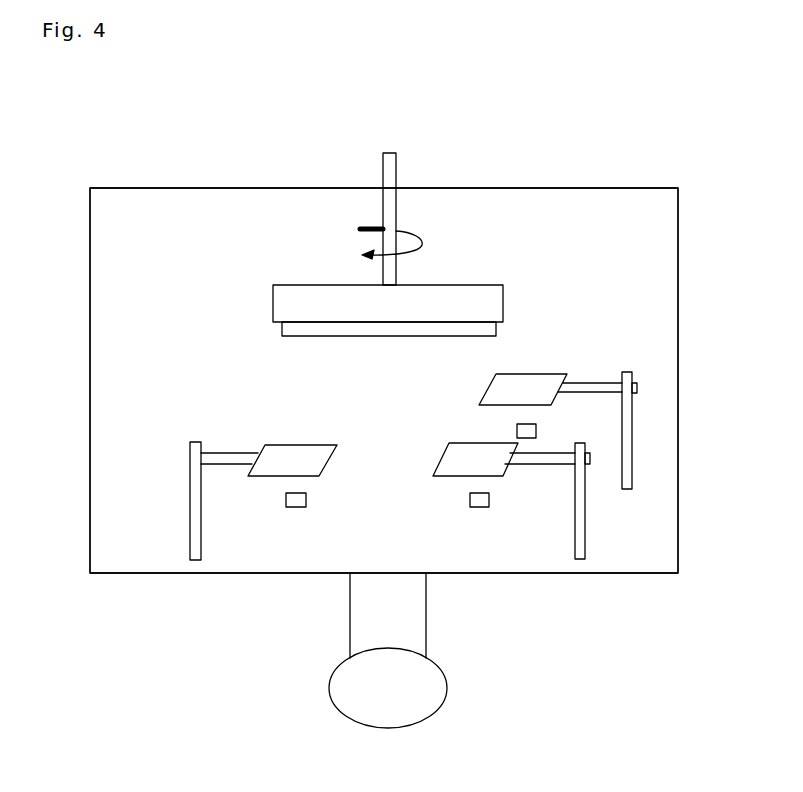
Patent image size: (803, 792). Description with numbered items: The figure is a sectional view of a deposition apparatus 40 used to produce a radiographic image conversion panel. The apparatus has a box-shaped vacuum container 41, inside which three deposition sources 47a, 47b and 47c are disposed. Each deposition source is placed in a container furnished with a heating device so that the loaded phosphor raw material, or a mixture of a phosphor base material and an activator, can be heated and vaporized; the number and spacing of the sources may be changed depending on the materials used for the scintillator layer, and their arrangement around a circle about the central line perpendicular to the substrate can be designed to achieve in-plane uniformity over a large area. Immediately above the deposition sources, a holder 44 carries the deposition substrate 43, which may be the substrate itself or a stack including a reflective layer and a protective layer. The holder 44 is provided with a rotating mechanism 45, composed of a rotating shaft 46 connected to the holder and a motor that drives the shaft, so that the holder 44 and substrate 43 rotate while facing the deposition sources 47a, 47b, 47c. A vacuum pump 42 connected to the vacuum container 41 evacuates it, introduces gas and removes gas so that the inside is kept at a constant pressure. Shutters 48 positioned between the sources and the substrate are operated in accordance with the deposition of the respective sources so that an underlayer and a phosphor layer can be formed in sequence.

The deposition apparatus 40 is at (446, 172).
The vacuum container 41 is at (680, 216).
The vacuum pump 42 is at (447, 686).
The deposition substrate 43 is at (496, 330).
The holder 44 is at (490, 285).
The rotating mechanism 45 is at (412, 265).
The rotating shaft 46 is at (383, 210).
The deposition source 47a is at (296, 508).
The deposition source 47b is at (472, 508).
The deposition source 47c is at (538, 424).
The shutters 48 is at (490, 388).